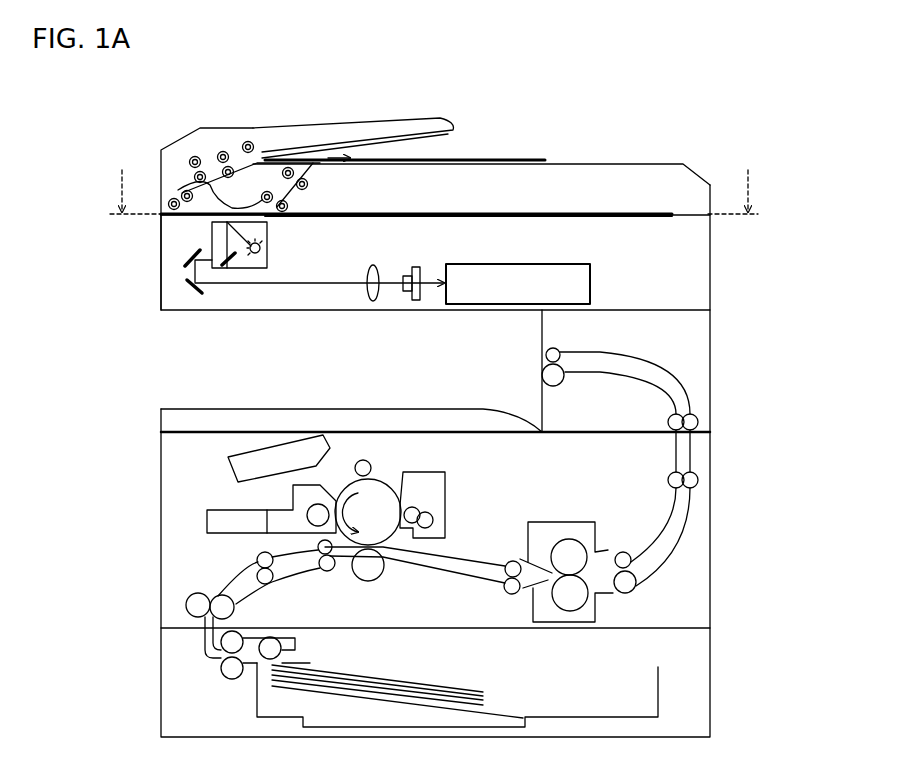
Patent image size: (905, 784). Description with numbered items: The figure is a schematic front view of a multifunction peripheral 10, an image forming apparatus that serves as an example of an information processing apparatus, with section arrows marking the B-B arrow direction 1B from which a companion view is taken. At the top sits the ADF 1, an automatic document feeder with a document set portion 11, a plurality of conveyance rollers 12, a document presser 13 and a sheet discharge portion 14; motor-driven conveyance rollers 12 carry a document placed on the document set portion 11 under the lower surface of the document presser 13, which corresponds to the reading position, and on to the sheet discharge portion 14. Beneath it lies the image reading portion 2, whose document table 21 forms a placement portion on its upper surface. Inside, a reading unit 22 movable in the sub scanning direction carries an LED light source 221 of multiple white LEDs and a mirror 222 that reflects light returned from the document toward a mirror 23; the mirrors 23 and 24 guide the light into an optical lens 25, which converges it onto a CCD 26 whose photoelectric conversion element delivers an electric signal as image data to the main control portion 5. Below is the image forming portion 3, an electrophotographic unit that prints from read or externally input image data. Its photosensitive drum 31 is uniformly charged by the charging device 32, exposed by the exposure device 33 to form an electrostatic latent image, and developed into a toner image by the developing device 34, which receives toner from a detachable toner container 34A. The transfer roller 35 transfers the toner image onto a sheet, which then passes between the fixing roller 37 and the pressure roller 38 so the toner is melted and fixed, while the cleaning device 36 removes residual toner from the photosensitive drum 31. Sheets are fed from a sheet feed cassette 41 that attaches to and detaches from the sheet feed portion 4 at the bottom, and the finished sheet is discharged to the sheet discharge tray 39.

The multifunction peripheral 10 is at (120, 109).
The ADF 1 is at (642, 163).
The B-B arrow direction 1B is at (435, 181).
The document set portion 11 is at (300, 129).
The conveyance rollers 12 is at (193, 156).
The document presser 13 is at (224, 206).
The sheet discharge portion 14 is at (561, 163).
The image reading portion 2 is at (158, 272).
The document table 21 is at (395, 221).
The reading unit 22 is at (268, 262).
The LED light source 221 is at (263, 247).
The mirror 222 is at (232, 267).
The mirror 23 is at (190, 254).
The mirror 24 is at (193, 289).
The optical lens 25 is at (373, 304).
The CCD 26 is at (418, 301).
The main control portion 5 is at (470, 263).
The image forming portion 3 is at (180, 452).
The sheet discharge tray 39 is at (470, 409).
The photosensitive drum 31 is at (392, 490).
The charging device 32 is at (355, 468).
The exposure device 33 is at (230, 470).
The developing device 34 is at (292, 490).
The toner container 34A is at (213, 535).
The transfer roller 35 is at (378, 580).
The cleaning device 36 is at (428, 472).
The fixing roller 37 is at (603, 550).
The pressure roller 38 is at (553, 605).
The sheet feed portion 4 is at (160, 690).
The sheet feed cassette 41 is at (658, 695).